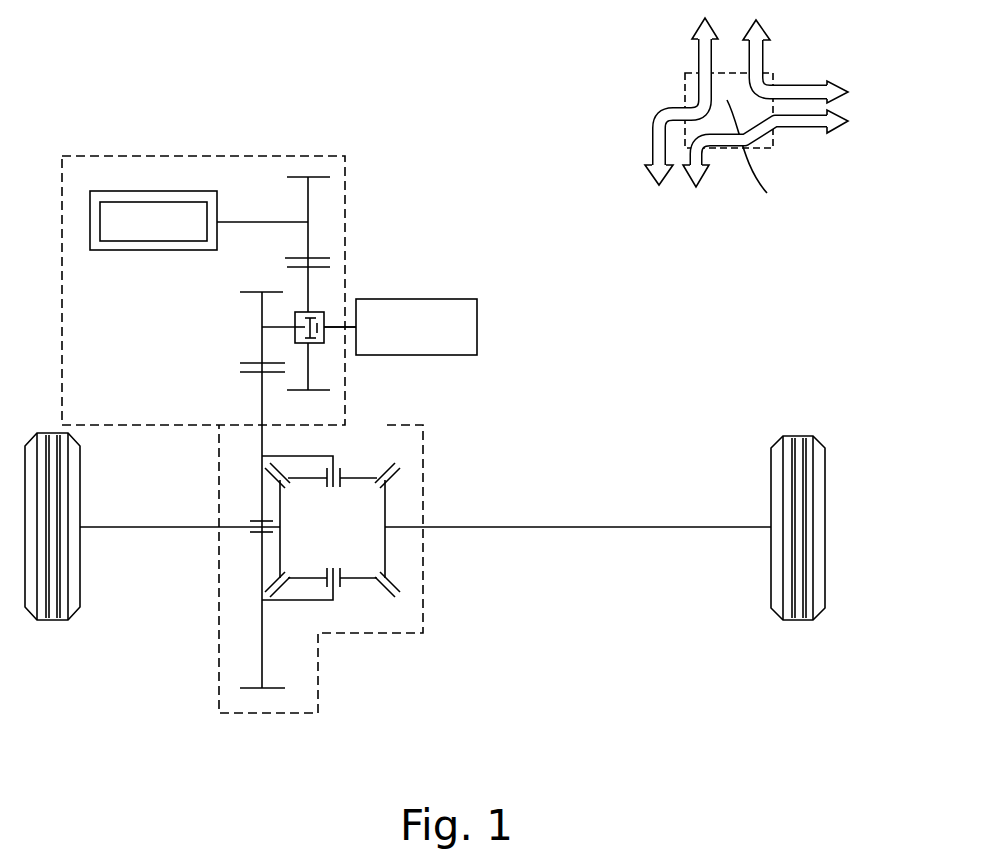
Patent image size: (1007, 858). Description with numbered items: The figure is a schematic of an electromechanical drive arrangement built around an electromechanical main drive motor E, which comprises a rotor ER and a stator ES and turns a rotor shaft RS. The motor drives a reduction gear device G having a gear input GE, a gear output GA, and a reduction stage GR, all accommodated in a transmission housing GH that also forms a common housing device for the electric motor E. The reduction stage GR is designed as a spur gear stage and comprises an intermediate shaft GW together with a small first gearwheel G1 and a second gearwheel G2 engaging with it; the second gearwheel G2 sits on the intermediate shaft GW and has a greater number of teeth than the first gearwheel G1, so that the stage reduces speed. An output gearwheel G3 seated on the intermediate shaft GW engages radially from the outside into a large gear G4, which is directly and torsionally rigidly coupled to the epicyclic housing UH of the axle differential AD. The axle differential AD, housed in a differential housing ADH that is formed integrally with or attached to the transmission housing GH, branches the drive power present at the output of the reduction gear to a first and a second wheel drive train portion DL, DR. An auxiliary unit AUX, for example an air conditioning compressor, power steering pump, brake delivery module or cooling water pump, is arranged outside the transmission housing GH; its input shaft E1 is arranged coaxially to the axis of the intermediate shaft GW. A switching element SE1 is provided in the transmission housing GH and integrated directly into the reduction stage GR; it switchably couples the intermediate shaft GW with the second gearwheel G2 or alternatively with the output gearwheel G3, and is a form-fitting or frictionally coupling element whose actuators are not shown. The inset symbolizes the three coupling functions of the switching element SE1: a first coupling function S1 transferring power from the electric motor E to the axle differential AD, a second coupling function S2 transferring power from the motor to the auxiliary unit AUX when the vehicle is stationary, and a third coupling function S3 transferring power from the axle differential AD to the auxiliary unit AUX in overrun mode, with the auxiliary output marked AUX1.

The reduction stage GR is at (378, 252).
The reduction gear device G is at (203, 233).
The transmission housing GH is at (175, 155).
The main drive motor E is at (129, 160).
The stator ES is at (165, 190).
The rotor ER is at (118, 207).
The rotor shaft RS is at (262, 161).
The gear input GE is at (227, 222).
The first gearwheel G1 is at (316, 165).
The second gearwheel G2 is at (283, 257).
The output gearwheel G3 is at (250, 292).
The intermediate shaft GW is at (283, 331).
The switching element SE1 is at (315, 310).
The input shaft E1 is at (337, 330).
The auxiliary unit AUX is at (416, 327).
The differential housing ADH is at (423, 597).
The epicyclic housing UH is at (317, 602).
The axle differential AD is at (398, 603).
The large gear G4 is at (234, 741).
The gear output GA is at (253, 690).
The first wheel drive train portion DL is at (160, 528).
The second wheel drive train portion DR is at (712, 528).
The first coupling function S1 is at (681, 101).
The second coupling function S2 is at (795, 61).
The third coupling function S3 is at (765, 148).
The auxiliary output AUX1 is at (888, 108).